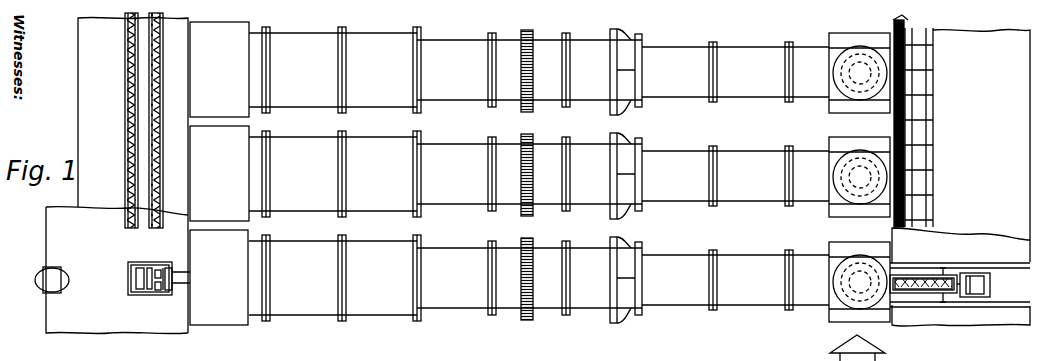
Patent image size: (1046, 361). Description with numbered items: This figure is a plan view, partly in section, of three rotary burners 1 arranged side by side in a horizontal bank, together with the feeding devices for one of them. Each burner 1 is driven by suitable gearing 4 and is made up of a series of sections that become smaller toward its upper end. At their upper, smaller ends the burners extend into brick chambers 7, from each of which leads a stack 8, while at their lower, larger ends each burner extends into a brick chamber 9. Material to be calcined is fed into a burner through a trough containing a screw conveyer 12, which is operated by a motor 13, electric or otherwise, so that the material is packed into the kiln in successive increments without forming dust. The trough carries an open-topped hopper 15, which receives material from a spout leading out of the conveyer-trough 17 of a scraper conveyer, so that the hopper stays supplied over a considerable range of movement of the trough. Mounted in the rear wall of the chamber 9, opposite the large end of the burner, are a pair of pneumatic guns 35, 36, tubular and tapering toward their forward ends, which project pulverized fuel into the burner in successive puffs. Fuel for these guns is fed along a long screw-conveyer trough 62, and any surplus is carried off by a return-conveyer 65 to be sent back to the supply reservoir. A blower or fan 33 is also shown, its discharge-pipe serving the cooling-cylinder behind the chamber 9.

The rotary burner 1 is at (656, 251).
The gearing 4 is at (533, 280).
The brick chamber 7 is at (859, 185).
The stack 8 is at (846, 322).
The chamber 9 is at (219, 173).
The screw conveyer 12 is at (915, 276).
The motor 13 is at (990, 285).
The hopper 15 is at (945, 295).
The conveyer-trough 17 is at (933, 152).
The blower or fan 33 is at (62, 277).
The pneumatic gun 35 is at (177, 291).
The pneumatic gun 36 is at (170, 264).
The screw-conveyer trough 62 is at (163, 140).
The return-conveyer 65 is at (125, 138).